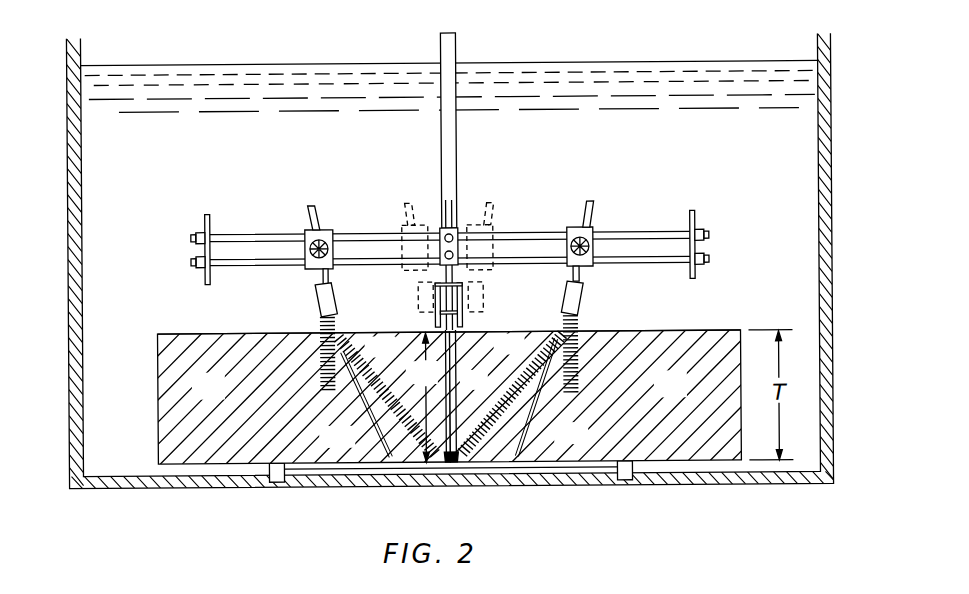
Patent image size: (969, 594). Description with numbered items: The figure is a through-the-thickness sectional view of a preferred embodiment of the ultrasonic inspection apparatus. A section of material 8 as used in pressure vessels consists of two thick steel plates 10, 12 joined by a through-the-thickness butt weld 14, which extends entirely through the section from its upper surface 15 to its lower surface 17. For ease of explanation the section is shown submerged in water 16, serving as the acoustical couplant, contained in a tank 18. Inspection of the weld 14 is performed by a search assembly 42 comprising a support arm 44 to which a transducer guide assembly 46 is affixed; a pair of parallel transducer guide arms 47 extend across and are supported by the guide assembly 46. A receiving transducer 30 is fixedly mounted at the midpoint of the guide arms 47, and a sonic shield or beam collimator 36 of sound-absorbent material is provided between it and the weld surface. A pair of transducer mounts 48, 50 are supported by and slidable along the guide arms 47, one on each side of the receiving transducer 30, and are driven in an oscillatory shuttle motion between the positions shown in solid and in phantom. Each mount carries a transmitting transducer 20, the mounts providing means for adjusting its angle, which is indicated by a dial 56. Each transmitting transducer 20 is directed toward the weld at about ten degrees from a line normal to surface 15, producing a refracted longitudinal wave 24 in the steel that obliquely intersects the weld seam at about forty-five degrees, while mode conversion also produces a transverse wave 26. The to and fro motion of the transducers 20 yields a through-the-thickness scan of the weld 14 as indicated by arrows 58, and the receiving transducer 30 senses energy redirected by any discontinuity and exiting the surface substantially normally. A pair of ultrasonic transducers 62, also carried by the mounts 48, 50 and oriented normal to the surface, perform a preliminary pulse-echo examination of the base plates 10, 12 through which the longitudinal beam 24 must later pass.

The material section 8 is at (150, 321).
The steel plate 10 is at (220, 396).
The steel plate 12 is at (682, 397).
The butt weld 14 is at (452, 381).
The surface 15 is at (722, 332).
The water 16 is at (700, 126).
The surface 17 is at (216, 465).
The tank 18 is at (826, 145).
The transmitting transducer 20 is at (332, 306).
The longitudinal wave beam 24 is at (382, 373).
The transverse wave 26 is at (372, 439).
The receiving transducer 30 is at (440, 298).
The beam collimator 36 is at (463, 325).
The search assembly 42 is at (614, 212).
The support arm 44 is at (458, 40).
The transducer guide assembly 46 is at (693, 215).
The transducer guide arms 47 is at (243, 233).
The transducer mount 48 is at (306, 270).
The transducer mount 50 is at (593, 267).
The dial 56 is at (330, 232).
The arrows 58 is at (422, 397).
The ultrasonic transducers 62 is at (314, 308).